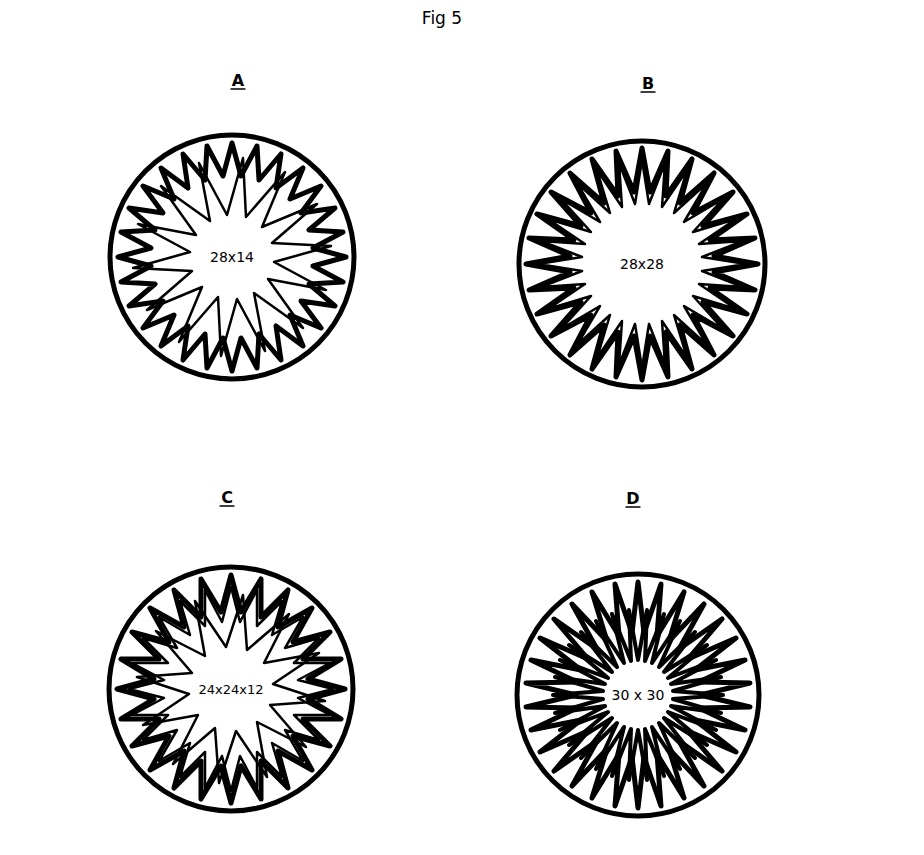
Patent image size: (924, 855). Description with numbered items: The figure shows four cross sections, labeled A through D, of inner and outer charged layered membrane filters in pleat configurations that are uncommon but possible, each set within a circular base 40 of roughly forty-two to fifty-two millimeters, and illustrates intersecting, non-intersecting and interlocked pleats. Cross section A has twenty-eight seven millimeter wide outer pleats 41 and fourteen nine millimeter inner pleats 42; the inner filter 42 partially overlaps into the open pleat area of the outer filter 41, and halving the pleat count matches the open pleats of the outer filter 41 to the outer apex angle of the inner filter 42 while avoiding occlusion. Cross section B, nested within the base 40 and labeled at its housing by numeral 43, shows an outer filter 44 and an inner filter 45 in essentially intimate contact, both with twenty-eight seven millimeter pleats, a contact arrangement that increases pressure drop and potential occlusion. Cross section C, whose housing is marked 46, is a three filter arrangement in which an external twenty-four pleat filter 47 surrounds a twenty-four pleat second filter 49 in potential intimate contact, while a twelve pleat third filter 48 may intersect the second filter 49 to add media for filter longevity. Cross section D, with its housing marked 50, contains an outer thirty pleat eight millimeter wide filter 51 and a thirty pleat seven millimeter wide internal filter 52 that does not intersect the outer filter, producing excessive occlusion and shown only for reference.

The base 40 is at (148, 172).
The outer pleats 41 is at (318, 173).
The inner pleats 42 is at (262, 212).
The outer ring of stent B 43 is at (548, 183).
The outer filter 44 is at (727, 176).
The inner filter 45 is at (710, 230).
The outer ring of stent C 46 is at (212, 568).
The external charged layered membrane filter 47 is at (302, 585).
The third filter 48 is at (182, 677).
The second filter 49 is at (178, 608).
The outer ring of stent D 50 is at (602, 577).
The outer filter 51 is at (665, 592).
The internal charged layered membrane filter 52 is at (713, 650).